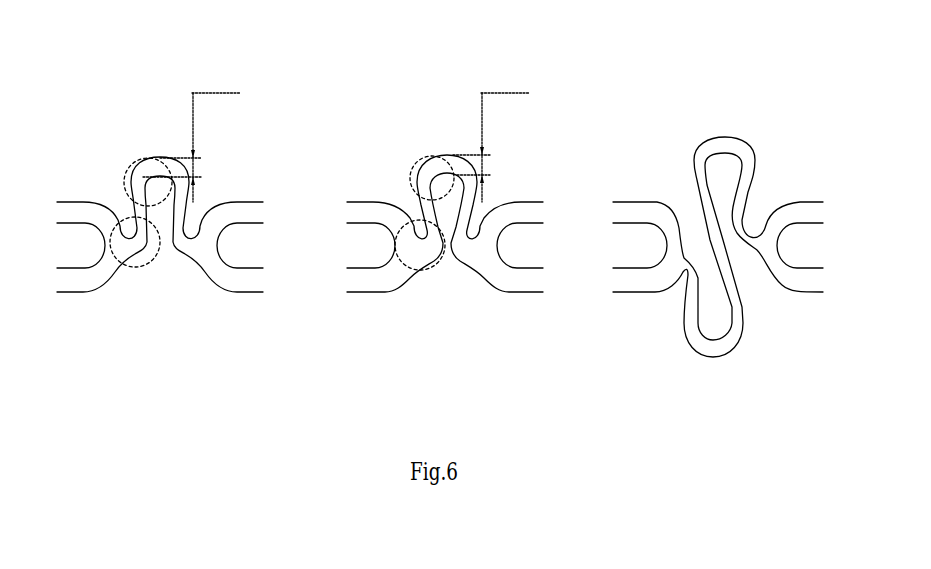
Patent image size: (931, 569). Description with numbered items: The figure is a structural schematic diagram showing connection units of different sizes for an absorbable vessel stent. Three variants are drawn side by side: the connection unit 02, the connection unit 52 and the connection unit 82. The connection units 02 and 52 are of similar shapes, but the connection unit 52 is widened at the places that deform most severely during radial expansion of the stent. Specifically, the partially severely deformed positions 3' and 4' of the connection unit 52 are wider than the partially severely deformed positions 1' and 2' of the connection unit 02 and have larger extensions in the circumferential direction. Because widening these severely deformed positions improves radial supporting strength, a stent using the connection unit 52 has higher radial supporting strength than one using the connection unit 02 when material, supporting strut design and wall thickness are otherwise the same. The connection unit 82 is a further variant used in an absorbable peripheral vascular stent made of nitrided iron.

The connection unit 02 is at (138, 178).
The connection unit 52 is at (423, 182).
The connection unit 82 is at (707, 183).
The partially severely deformed position 2' is at (145, 142).
The partially severely deformed position 1' is at (156, 275).
The partially severely deformed position 4' is at (420, 144).
The partially severely deformed position 3' is at (447, 272).